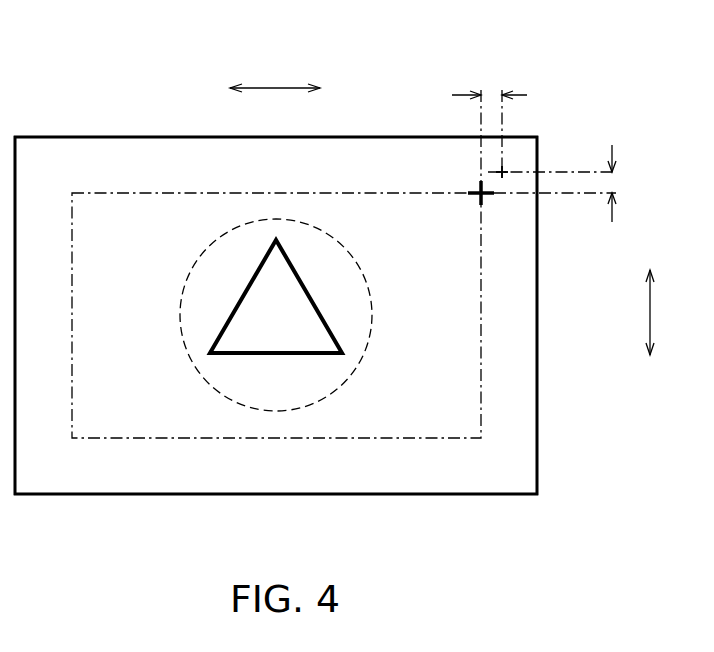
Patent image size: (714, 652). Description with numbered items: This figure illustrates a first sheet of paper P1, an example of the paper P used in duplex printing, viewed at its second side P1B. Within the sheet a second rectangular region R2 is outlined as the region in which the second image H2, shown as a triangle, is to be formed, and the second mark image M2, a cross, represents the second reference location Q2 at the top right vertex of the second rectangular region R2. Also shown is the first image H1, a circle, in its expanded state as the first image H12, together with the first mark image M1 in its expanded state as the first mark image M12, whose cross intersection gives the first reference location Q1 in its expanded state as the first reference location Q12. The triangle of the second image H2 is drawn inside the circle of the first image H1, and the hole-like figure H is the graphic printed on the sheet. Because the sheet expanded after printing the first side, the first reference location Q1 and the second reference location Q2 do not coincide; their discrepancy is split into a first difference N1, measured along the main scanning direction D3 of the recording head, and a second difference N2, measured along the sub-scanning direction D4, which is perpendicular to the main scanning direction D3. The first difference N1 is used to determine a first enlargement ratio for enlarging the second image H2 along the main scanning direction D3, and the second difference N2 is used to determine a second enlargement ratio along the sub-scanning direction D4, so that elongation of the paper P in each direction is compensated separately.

The paper P is at (276, 252).
The first sheet of paper P1 is at (108, 101).
The second side P1B is at (505, 421).
The second rectangular region R2 is at (481, 347).
The first image H1 is at (320, 315).
The first image H12 is at (338, 244).
The hole H is at (390, 309).
The second image H2 is at (326, 357).
The first mark image M1 is at (579, 127).
The first mark image M12 is at (502, 168).
The first reference location Q1 is at (579, 143).
The first reference location Q12 is at (507, 172).
The second mark image M2 is at (485, 196).
The second reference location Q2 is at (483, 199).
The first difference N1 is at (612, 184).
The second difference N2 is at (492, 95).
The main scanning direction D3 is at (651, 320).
The sub-scanning direction D4 is at (280, 88).